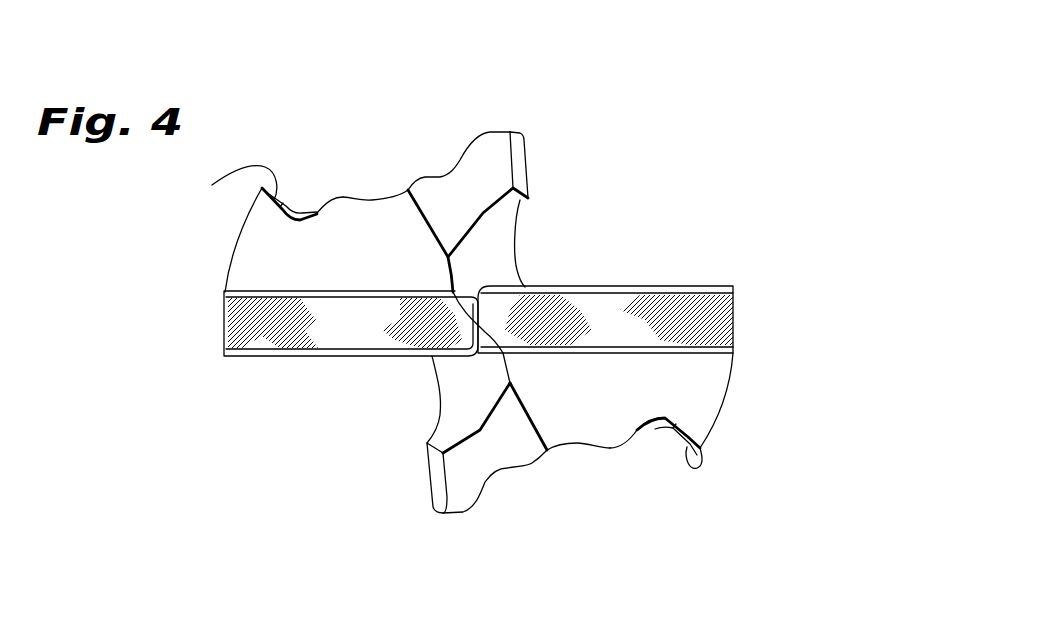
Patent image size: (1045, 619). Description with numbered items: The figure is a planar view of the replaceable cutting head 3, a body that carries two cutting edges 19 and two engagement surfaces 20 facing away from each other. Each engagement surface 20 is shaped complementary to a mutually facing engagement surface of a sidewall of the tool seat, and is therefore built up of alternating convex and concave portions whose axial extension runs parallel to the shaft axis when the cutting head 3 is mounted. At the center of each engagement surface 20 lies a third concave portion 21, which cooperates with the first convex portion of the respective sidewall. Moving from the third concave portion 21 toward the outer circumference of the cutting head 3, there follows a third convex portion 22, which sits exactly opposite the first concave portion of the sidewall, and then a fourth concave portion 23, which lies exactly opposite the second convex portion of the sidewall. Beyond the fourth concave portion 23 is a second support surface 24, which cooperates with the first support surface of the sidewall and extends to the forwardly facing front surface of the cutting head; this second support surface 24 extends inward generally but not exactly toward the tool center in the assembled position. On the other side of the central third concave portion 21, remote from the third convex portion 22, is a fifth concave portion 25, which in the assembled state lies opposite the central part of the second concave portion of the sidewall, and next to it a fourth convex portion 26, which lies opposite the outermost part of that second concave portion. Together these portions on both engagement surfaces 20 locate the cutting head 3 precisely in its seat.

The replaceable cutting head 3 is at (530, 263).
The cutting edge 19 is at (690, 286).
The engagement surface 20 is at (373, 184).
The third concave portion 21 is at (408, 190).
The third convex portion 22 is at (343, 192).
The fourth concave portion 23 is at (303, 210).
The second support surface 24 is at (775, 422).
The fifth concave portion 25 is at (458, 165).
The fourth convex portion 26 is at (510, 132).